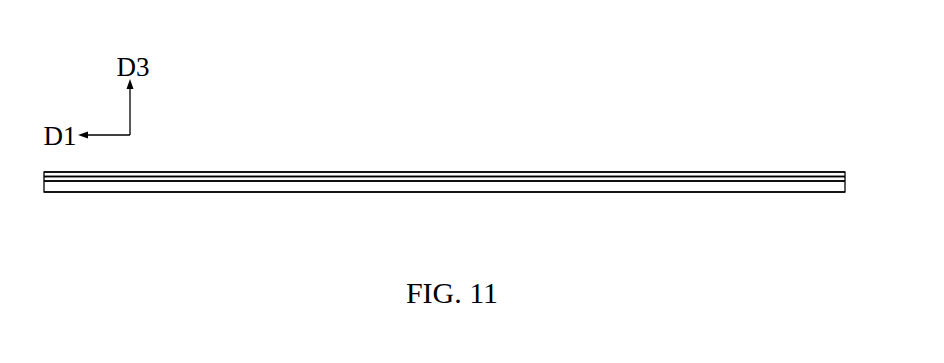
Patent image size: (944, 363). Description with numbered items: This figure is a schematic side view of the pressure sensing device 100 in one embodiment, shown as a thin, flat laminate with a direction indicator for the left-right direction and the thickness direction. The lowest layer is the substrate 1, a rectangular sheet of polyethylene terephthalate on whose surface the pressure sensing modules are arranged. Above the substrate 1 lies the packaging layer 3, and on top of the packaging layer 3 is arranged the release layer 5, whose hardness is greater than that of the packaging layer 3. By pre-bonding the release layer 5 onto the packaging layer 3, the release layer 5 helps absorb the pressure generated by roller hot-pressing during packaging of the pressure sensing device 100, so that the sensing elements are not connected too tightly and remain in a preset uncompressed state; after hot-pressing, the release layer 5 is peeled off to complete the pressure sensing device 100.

The pressure sensing device 100 is at (818, 102).
The substrate 1 is at (628, 193).
The packaging layer 3 is at (637, 179).
The release layer 5 is at (690, 172).